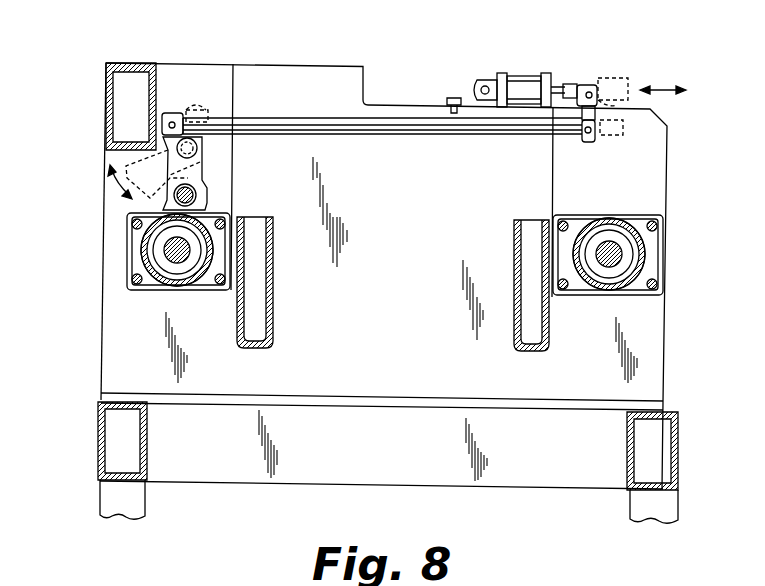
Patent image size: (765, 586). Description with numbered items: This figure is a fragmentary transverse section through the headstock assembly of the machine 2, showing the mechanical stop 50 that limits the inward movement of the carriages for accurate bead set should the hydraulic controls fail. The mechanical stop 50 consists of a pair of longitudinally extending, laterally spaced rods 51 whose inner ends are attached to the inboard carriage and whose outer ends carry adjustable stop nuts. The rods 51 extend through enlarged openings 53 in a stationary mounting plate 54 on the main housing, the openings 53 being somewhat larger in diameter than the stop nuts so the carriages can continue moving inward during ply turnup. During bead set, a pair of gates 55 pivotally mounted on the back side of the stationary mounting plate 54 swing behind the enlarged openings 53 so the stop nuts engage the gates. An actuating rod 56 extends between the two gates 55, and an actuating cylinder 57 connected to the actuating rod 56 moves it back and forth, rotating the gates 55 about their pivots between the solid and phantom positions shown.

The apparatus 2 is at (98, 432).
The mechanical stop 50 is at (183, 110).
The rods 51 is at (196, 187).
The openings 53 is at (197, 197).
The stationary mounting plate 54 is at (112, 327).
The gates 55 is at (200, 162).
The actuating rod 56 is at (318, 124).
The actuating cylinder 57 is at (527, 73).